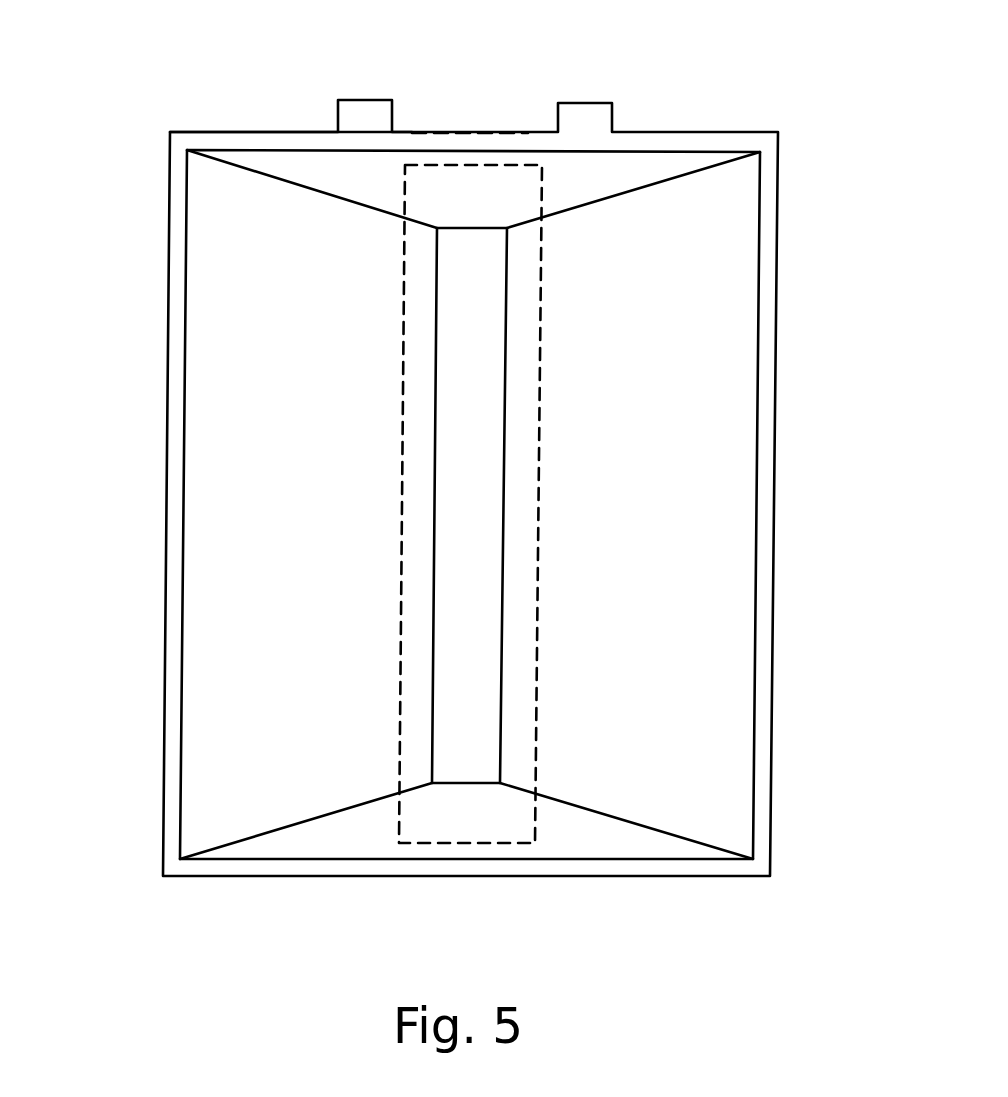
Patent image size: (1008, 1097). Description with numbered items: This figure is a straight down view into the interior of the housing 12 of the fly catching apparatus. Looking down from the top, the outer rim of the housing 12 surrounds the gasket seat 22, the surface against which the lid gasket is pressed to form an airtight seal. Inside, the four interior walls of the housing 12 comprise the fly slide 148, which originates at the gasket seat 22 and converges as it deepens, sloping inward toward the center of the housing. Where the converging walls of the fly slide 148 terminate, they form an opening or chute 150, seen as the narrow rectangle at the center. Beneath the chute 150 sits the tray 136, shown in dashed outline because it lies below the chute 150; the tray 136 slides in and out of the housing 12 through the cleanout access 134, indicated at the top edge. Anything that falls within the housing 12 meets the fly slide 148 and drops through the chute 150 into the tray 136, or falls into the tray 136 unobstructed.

The housing 12 is at (713, 132).
The gasket seat 22 is at (643, 148).
The cleanout access 134 is at (508, 133).
The tray 136 is at (402, 320).
The fly slide 148 is at (618, 173).
The chute 150 is at (470, 518).